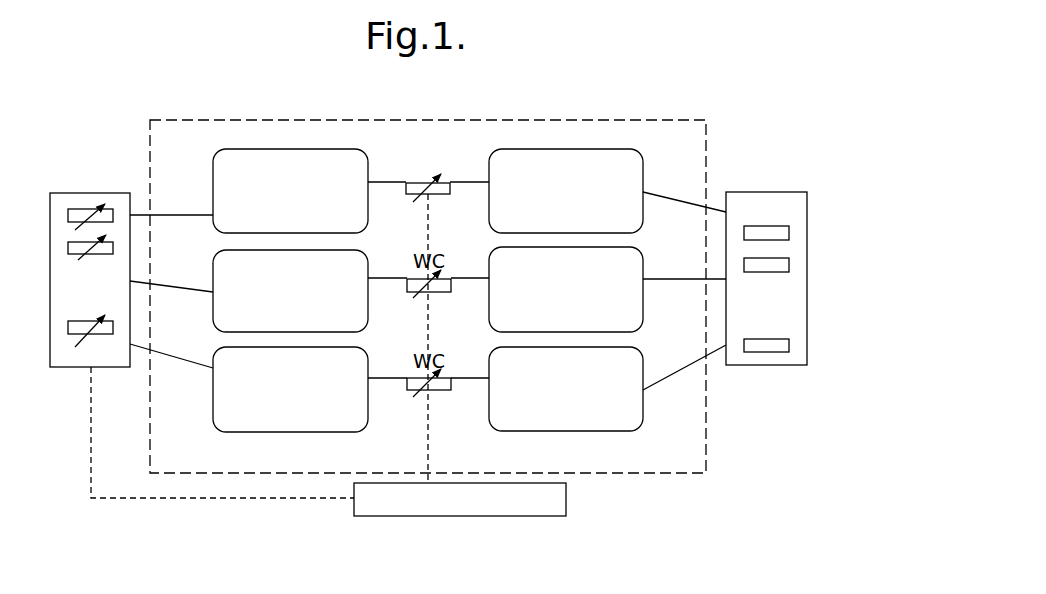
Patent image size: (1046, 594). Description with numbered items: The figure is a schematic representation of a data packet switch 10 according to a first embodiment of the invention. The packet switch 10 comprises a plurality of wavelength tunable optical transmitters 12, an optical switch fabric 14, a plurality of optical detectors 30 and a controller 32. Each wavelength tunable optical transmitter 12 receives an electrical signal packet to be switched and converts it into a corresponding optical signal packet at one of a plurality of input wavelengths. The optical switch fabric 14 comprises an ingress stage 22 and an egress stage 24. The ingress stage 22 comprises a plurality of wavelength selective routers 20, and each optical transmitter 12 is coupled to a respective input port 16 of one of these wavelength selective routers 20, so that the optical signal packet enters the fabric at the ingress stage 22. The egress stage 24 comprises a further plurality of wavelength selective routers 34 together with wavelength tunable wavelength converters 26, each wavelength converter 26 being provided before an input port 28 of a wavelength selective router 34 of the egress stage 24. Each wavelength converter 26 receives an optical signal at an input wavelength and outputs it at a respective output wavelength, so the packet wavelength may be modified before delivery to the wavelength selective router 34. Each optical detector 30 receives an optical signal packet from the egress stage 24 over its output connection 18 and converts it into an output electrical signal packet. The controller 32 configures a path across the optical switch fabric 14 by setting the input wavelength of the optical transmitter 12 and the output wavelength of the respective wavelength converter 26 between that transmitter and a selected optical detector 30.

The packet switch 10 is at (580, 115).
The wavelength tunable optical transmitter 12 is at (85, 208).
The optical switch fabric 14 is at (269, 314).
The input port 16 is at (213, 372).
The output link 18 is at (643, 190).
The wavelength selective router 20 is at (231, 156).
The ingress stage 22 is at (269, 443).
The egress stage 24 is at (495, 145).
The wavelength tunable wavelength converter 26 is at (410, 183).
The input port 28 is at (489, 382).
The optical detector 30 is at (767, 353).
The controller 32 is at (540, 505).
The wavelength selective router 34 is at (545, 407).